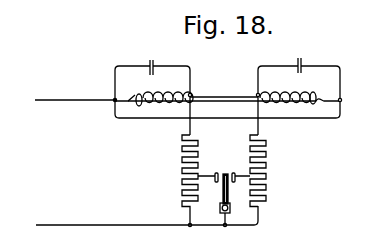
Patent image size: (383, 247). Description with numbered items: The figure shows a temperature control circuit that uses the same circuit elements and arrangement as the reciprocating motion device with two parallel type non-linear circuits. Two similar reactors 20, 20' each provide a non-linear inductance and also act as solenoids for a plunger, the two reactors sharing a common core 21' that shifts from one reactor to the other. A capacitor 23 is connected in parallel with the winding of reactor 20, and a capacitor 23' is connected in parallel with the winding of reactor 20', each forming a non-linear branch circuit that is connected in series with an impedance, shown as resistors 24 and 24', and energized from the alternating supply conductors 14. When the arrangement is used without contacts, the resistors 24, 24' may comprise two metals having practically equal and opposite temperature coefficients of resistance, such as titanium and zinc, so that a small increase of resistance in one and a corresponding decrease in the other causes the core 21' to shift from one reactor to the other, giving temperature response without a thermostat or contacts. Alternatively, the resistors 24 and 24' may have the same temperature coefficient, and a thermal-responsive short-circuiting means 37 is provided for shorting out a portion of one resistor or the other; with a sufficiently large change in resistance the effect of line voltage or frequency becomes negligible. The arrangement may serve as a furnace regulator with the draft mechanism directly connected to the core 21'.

The alternating supply conductors 14 is at (45, 100).
The reactor 20 is at (156, 93).
The reactor 20' is at (297, 89).
The common core 21' is at (224, 91).
The capacitor 23 is at (137, 61).
The capacitor 23' is at (314, 58).
The resistor 24 is at (177, 180).
The resistor 24' is at (272, 171).
The thermal-responsive short-circuiting means 37 is at (221, 196).